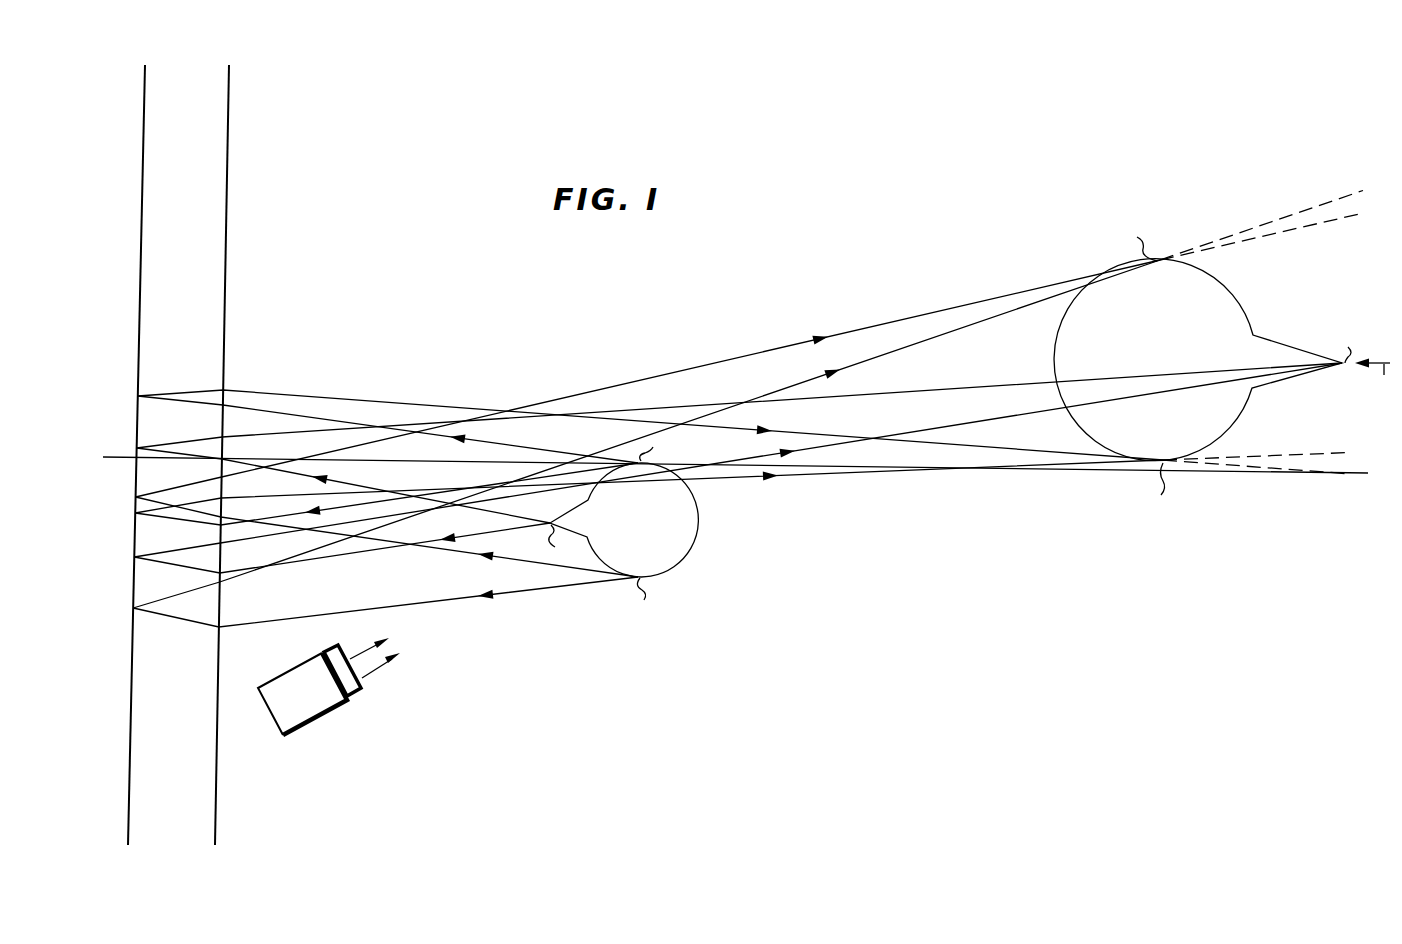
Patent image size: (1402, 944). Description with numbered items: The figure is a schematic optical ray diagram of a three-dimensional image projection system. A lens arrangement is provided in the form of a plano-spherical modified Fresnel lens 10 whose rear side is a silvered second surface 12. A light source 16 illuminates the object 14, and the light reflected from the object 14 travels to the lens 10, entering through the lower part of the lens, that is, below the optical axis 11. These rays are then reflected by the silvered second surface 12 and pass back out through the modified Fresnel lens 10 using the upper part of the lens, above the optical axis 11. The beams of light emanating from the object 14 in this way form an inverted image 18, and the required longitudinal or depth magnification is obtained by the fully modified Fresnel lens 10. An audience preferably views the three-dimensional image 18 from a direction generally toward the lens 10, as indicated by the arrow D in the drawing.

The plano-spherical modified Fresnel lens 10 is at (222, 207).
The optical axis 11 is at (112, 458).
The silvered second surface 12 is at (139, 207).
The object 14 is at (680, 548).
The light source 16 is at (357, 707).
The inverted image 18 is at (1243, 293).